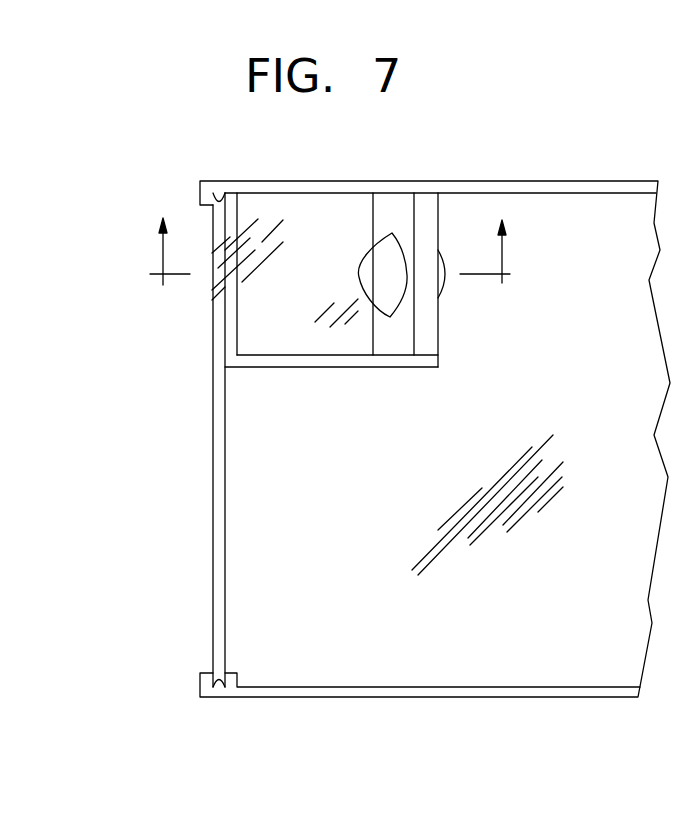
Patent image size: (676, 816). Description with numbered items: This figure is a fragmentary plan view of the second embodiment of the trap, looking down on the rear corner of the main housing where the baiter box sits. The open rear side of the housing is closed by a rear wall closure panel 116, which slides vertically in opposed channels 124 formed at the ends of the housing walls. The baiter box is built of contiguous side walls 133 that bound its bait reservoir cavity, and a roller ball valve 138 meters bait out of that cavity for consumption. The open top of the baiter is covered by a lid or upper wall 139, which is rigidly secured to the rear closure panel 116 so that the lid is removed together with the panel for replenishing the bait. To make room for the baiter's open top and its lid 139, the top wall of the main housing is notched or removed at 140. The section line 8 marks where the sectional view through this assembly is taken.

The section line 8- 8 is at (333, 266).
The rear wall closure panel 116 is at (220, 477).
The opposed channels 124 is at (224, 195).
The contiguous side walls 133 is at (238, 338).
The roller ball valve 138 is at (440, 290).
The lid or upper wall 139 is at (317, 203).
The notch in top wall 140 is at (430, 218).